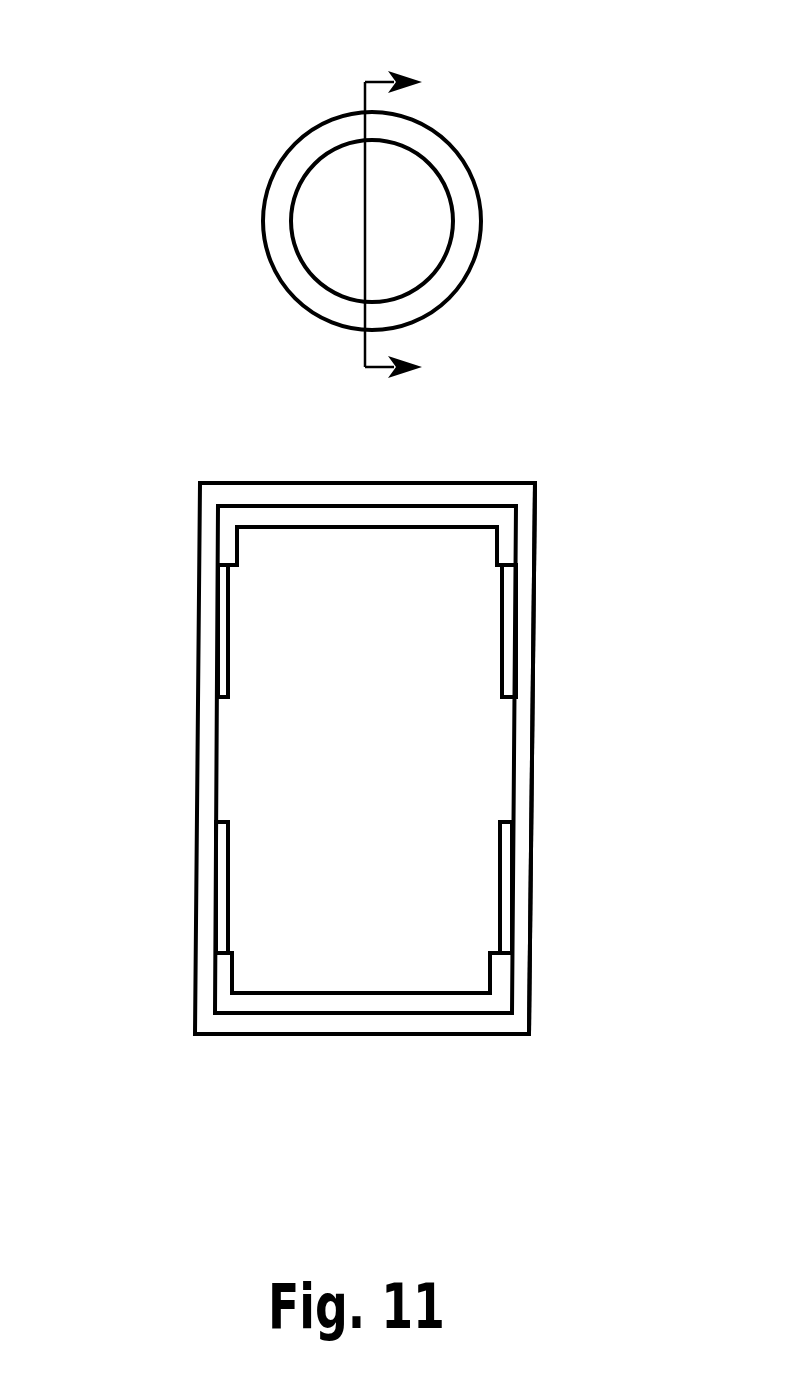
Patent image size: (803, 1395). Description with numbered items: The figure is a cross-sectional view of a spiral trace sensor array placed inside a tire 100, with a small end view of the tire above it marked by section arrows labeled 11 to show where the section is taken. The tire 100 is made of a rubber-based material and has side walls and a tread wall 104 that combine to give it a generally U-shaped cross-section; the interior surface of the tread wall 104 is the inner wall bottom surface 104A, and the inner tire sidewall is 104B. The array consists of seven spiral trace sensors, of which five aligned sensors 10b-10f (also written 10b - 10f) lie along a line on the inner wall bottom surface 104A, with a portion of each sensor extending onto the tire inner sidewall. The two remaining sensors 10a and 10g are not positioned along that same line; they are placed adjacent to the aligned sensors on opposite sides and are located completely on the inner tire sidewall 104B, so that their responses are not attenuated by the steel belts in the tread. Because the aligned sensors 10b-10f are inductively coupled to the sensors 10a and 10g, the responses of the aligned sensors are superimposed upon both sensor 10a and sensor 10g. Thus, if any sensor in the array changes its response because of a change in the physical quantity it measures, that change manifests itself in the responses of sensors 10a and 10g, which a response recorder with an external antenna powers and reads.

The section line 11- 11 is at (393, 221).
The tire 100 is at (308, 556).
The tread wall 104 is at (315, 825).
The interior surface of tread wall 104A is at (411, 1069).
The inner tire sidewall 104B is at (600, 758).
The spiral trace sensor 10a is at (155, 759).
The aligned sensors 10b-10f is at (412, 787).
The aligned sensors 10b - 10f is at (412, 787).
The spiral trace sensor 10g is at (574, 750).